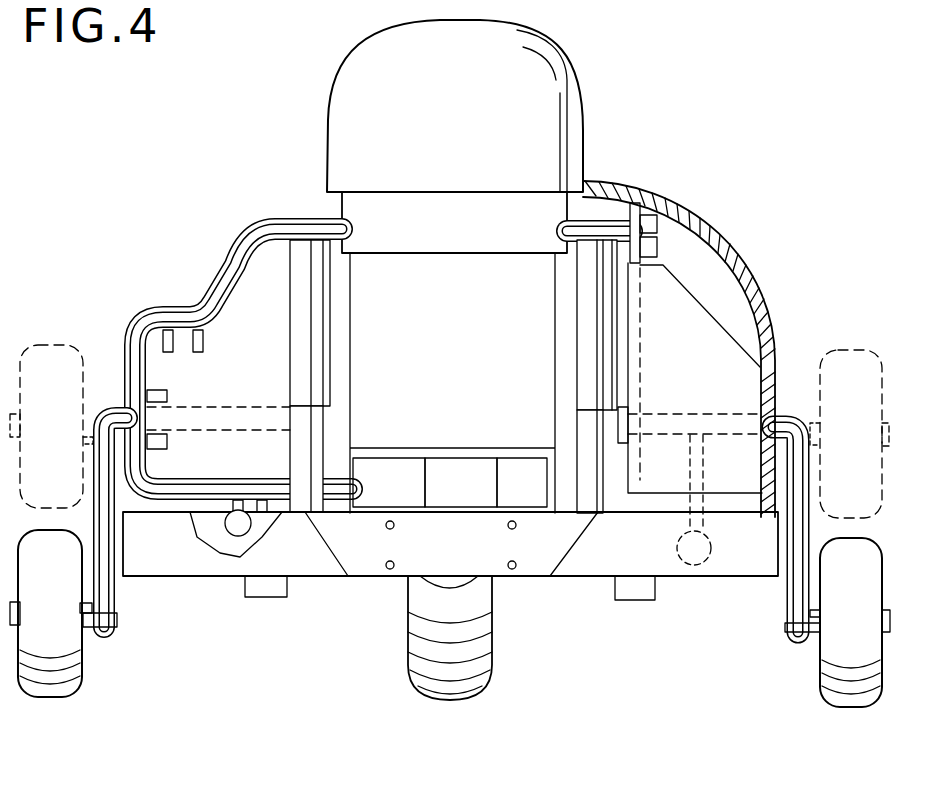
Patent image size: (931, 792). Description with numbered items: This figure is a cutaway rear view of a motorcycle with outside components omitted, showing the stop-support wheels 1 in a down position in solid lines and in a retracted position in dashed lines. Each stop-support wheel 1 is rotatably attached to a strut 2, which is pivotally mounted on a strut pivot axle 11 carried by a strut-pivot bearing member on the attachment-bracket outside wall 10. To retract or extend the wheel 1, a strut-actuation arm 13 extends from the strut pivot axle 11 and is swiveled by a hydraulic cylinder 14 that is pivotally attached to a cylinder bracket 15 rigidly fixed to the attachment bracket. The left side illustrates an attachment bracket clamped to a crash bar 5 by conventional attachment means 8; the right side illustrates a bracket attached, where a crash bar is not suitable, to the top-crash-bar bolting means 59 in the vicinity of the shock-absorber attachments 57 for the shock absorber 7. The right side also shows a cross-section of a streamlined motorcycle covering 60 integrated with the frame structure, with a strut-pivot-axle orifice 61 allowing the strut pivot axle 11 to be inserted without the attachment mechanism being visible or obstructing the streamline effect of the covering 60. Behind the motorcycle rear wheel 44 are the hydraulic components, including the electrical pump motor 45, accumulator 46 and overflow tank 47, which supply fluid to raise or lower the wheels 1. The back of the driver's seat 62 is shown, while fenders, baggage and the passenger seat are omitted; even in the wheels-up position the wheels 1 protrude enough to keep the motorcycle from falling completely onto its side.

The stop-support wheel 1 is at (47, 697).
The strut 2 is at (470, 540).
The crash bar 5 is at (128, 313).
The shock absorber 7 is at (587, 313).
The attachment means 8 is at (163, 348).
The attachment-bracket outside wall 10 is at (185, 370).
The strut pivot axle 11 is at (231, 407).
The strut-actuation arm 13 is at (693, 477).
The hydraulic cylinder 14 is at (238, 525).
The cylinder bracket 15 is at (267, 528).
The motorcycle rear wheel 44 is at (455, 700).
The electrical pump motor 45 is at (395, 457).
The accumulator 46 is at (458, 463).
The overflow tank 47 is at (522, 468).
The shock-absorber attachments 57 is at (653, 217).
The top-crash-bar bolting means 59 is at (342, 230).
The motorcycle covering 60 is at (770, 305).
The strut-pivot-axle orifice 61 is at (777, 413).
The driver's seat 62 is at (547, 93).